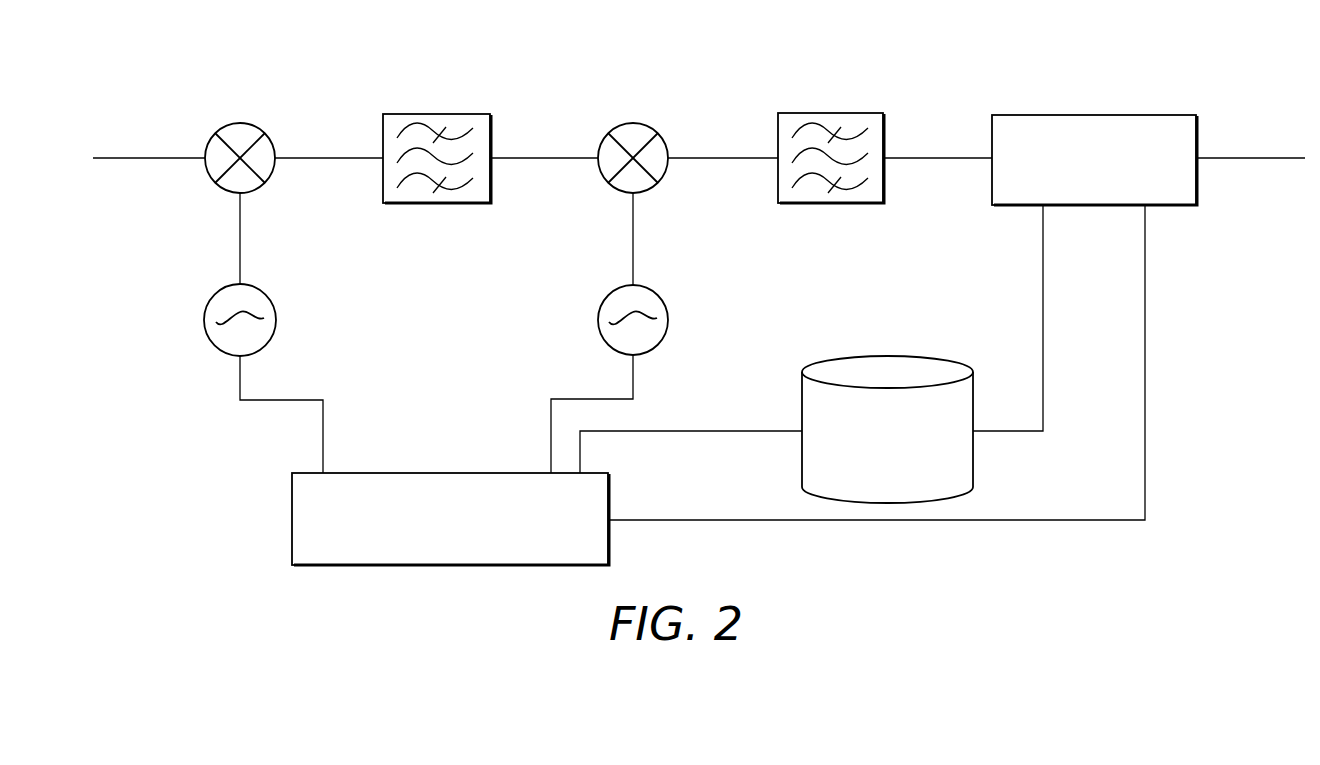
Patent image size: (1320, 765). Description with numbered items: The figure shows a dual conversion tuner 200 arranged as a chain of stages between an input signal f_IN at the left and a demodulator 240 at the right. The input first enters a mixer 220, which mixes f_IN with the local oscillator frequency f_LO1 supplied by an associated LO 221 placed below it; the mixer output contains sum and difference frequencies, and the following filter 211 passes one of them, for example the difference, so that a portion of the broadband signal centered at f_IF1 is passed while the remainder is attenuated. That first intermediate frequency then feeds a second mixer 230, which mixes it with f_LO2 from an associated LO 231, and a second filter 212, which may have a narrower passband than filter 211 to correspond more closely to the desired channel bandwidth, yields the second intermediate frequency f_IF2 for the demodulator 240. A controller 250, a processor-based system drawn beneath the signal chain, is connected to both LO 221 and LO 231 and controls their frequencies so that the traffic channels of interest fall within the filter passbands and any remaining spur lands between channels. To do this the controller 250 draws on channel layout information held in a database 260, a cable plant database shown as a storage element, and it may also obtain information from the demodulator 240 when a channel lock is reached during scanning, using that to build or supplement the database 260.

The tuner 200 is at (864, 42).
The filter 211 is at (440, 203).
The filter 212 is at (827, 203).
The mixer 220 is at (270, 137).
The LO 221 is at (268, 342).
The mixer 230 is at (661, 136).
The LO 231 is at (662, 343).
The demodulator 240 is at (1105, 115).
The controller 250 is at (292, 521).
The database 260 is at (800, 416).